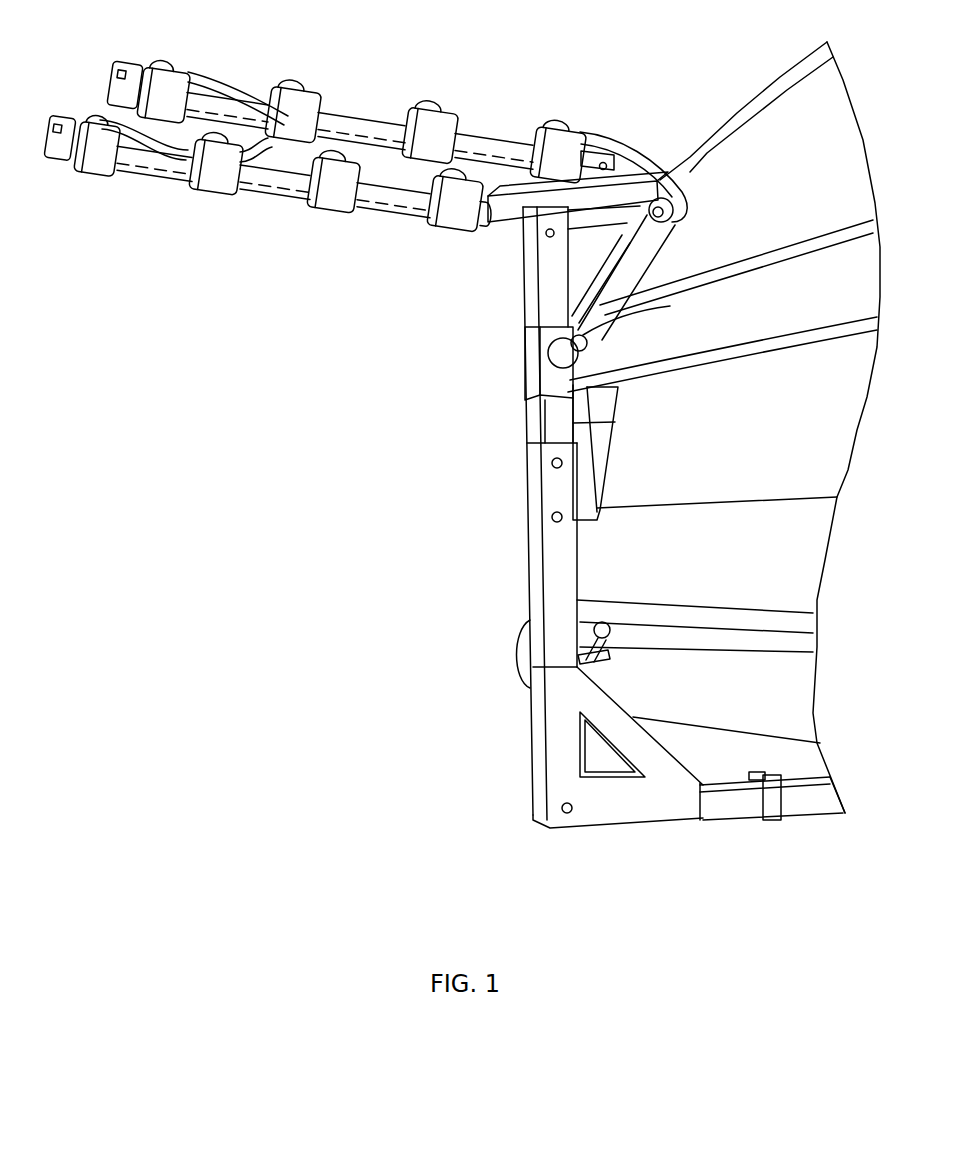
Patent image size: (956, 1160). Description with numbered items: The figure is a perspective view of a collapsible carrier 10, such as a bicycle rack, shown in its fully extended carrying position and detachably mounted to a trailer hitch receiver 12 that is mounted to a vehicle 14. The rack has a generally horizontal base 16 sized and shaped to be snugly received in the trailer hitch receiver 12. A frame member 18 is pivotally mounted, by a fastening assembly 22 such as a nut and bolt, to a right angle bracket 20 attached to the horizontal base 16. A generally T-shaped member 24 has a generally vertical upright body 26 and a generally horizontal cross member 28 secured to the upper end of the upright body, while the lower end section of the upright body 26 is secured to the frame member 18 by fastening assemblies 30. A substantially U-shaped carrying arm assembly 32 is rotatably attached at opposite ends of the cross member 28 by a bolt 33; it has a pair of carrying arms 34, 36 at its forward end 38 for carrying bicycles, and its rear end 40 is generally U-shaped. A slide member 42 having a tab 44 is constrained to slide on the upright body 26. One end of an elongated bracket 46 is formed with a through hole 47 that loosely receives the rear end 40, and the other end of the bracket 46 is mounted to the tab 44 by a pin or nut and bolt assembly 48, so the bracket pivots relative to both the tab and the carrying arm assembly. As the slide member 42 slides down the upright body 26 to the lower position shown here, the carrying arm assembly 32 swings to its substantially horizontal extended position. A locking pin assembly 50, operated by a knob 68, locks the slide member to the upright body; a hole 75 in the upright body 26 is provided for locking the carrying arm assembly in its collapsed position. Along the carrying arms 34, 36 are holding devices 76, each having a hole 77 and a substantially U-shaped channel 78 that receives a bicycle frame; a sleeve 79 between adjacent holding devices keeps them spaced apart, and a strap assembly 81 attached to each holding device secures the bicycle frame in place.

The collapsible carrier 10 is at (373, 532).
The trailer hitch receiver 12 is at (822, 810).
The vehicle 14 is at (772, 467).
The horizontal base 16 is at (733, 807).
The frame member 18 is at (555, 580).
The bracket 20 is at (622, 822).
The fastening assembly 22 is at (560, 808).
The T-shaped member 24 is at (475, 312).
The upright body 26 is at (525, 428).
The cross member 28 is at (535, 198).
The fastening assemblies 30 is at (552, 517).
The carrying arm assembly 32 is at (78, 246).
The bolt 33 is at (627, 146).
The carrying arm 34 is at (398, 95).
The carrying arm 36 is at (293, 280).
The forward end 38 is at (102, 107).
The rear end 40 is at (697, 196).
The slide member 42 is at (522, 335).
The tab 44 is at (670, 307).
The elongated bracket 46 is at (657, 263).
The through hole 47 is at (692, 222).
The nut and bolt assembly 48 is at (587, 357).
The locking pin assembly 50 is at (540, 373).
The knob 68 is at (615, 385).
The hole 75 is at (550, 236).
The holding devices 76 is at (188, 70).
The hole 77 is at (172, 180).
The U-shaped channel 78 is at (142, 68).
The sleeve 79 is at (125, 173).
The strap assembly 81 is at (250, 82).